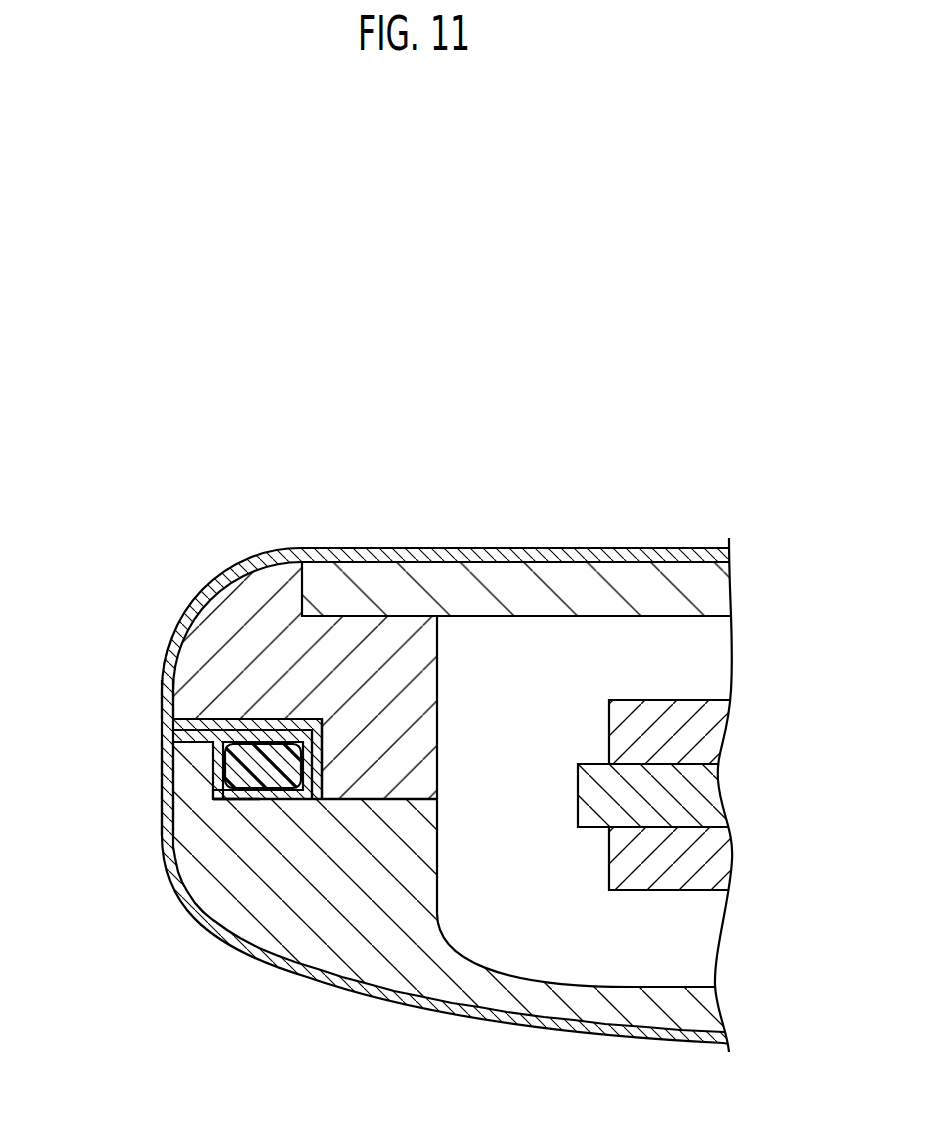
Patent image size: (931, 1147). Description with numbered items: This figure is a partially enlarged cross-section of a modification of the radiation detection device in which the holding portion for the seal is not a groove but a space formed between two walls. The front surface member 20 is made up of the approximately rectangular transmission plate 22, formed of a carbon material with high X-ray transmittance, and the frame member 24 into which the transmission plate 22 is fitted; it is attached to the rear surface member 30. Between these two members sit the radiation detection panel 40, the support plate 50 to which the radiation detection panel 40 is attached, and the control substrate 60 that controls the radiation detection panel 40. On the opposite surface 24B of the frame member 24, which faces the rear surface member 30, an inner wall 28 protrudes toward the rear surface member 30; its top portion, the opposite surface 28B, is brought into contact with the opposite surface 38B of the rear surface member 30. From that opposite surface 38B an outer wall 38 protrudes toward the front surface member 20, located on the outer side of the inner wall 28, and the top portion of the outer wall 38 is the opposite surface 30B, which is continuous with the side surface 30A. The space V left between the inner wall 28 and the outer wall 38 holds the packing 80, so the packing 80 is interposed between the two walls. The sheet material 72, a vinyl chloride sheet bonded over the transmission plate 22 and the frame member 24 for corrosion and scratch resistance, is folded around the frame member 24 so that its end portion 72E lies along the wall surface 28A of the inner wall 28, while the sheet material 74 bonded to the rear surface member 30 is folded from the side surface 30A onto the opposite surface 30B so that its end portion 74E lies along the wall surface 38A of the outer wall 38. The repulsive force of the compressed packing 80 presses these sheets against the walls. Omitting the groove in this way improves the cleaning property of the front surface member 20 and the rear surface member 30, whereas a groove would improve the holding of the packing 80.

The front surface member 20 is at (413, 463).
The transmission plate 22 is at (403, 548).
The frame member 24 is at (290, 556).
The opposite surface 24B is at (262, 730).
The inner wall 28 is at (400, 755).
The wall surface 28A is at (307, 716).
The opposite surface 28B is at (390, 802).
The rear surface member 30 is at (470, 1014).
The side surface 30A is at (162, 757).
The opposite surface 30B is at (163, 700).
The outer wall 38 is at (188, 782).
The wall surface 38A is at (183, 738).
The opposite surface 38B is at (218, 800).
The radiation detection panel 40 is at (690, 700).
The support plate 50 is at (692, 828).
The control substrate 60 is at (692, 890).
The sheet material 72 is at (582, 548).
The end portion 72E is at (312, 797).
The sheet material 74 is at (262, 970).
The end portion 74E is at (225, 801).
The packing 80 is at (262, 768).